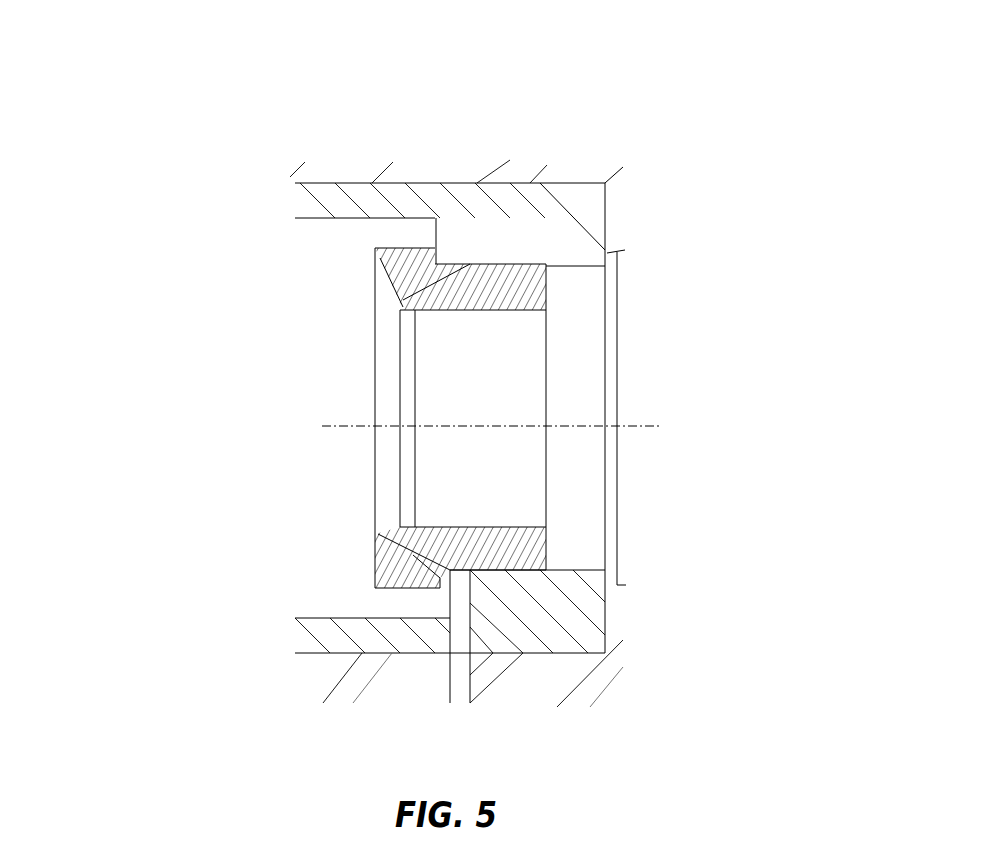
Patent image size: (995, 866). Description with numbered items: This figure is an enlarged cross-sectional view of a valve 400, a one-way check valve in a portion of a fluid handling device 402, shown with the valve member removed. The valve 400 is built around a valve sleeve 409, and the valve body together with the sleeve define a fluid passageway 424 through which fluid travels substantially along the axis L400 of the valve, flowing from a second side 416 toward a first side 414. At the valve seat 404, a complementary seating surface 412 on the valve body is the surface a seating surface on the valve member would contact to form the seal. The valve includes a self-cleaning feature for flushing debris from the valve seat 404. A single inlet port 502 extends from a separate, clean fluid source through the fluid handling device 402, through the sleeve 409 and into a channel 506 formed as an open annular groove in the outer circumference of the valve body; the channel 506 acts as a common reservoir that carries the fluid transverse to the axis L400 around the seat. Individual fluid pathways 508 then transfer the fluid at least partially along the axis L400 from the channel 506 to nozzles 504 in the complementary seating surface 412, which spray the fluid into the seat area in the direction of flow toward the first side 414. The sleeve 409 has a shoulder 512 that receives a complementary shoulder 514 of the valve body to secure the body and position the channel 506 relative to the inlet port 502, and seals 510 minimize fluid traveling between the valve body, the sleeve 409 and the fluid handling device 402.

The valve 400 is at (636, 243).
The fluid handling device 402 is at (610, 222).
The valve seat 404 is at (348, 556).
The valve sleeve 409 is at (560, 207).
The complementary seating surface 412 is at (380, 303).
The first side 414 is at (313, 535).
The second side 416 is at (585, 477).
The fluid passageway 424 is at (568, 350).
The inlet port 502 is at (458, 683).
The nozzles 504 is at (397, 377).
The channel 506 is at (455, 262).
The fluid pathways 508 is at (425, 273).
The seals 510 is at (484, 262).
The shoulder 512 is at (438, 583).
The complementary shoulder 514 is at (433, 253).
The axis L400 is at (623, 427).